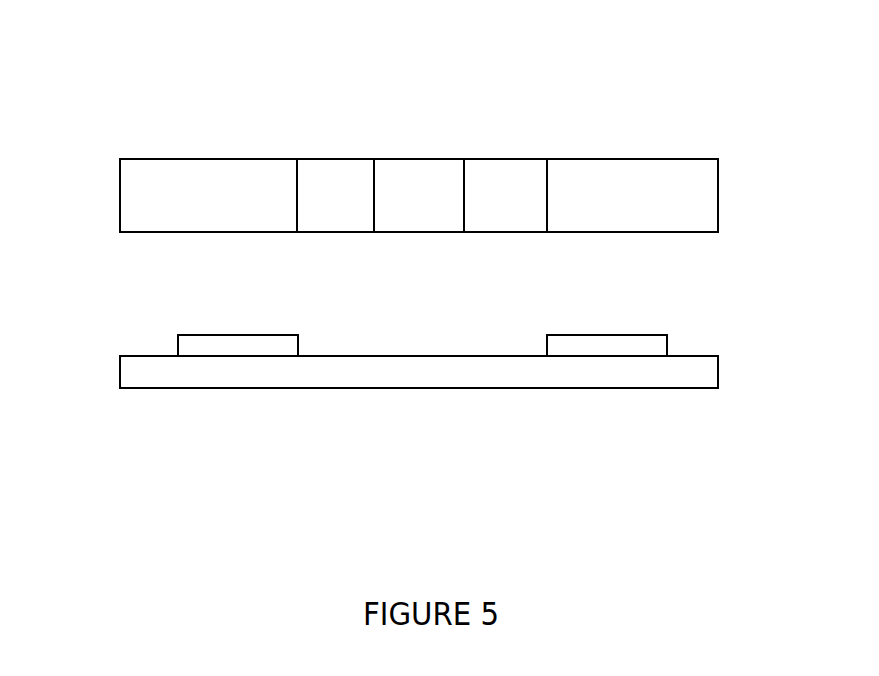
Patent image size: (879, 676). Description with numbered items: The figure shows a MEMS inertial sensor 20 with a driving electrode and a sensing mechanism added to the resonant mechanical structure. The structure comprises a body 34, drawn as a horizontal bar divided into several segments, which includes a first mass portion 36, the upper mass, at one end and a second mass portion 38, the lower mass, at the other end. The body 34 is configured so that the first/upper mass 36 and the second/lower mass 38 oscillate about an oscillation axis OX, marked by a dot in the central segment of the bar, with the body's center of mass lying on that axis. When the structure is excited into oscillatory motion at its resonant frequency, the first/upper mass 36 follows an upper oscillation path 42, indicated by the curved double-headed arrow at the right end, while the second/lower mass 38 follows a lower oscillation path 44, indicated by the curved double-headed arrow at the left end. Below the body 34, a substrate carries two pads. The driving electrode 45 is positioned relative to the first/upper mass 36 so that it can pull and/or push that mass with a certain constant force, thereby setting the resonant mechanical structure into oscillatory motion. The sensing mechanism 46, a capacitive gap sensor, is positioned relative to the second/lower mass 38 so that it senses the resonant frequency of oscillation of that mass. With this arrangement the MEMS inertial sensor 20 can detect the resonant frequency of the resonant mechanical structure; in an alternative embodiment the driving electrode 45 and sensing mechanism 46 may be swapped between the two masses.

The MEMS inertial sensor 20 is at (172, 120).
The second mass portion 38 is at (205, 190).
The body 34 is at (330, 188).
The oscillation axis ox is at (418, 198).
The first mass portion 36 is at (600, 188).
The lower oscillation path 44 is at (98, 134).
The upper oscillation path 42 is at (750, 134).
The sensing mechanism 46 is at (218, 345).
The driving electrode 45 is at (612, 345).